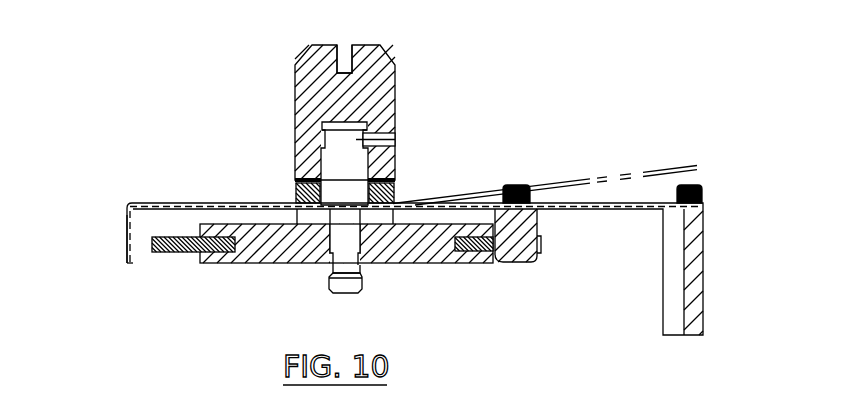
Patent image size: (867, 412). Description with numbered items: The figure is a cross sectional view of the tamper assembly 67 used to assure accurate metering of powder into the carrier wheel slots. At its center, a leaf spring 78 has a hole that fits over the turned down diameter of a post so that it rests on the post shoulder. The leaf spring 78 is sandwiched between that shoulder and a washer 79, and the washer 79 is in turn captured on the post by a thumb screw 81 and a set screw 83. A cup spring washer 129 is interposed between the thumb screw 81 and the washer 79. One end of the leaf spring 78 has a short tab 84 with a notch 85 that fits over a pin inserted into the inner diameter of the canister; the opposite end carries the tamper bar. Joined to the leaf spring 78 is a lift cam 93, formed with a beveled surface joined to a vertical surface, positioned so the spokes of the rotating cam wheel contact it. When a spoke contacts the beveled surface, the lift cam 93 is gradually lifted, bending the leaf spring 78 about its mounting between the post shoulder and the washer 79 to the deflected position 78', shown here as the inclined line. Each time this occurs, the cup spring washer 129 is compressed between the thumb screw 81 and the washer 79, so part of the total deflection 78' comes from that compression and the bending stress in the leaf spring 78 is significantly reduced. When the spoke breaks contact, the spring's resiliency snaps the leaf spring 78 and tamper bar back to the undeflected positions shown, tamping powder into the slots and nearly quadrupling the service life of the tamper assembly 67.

The tamper assembly 67 is at (395, 105).
The leaf spring 78 is at (415, 287).
The deflected position 78' is at (585, 148).
The washer 79 is at (296, 185).
The thumb screw 81 is at (382, 88).
The set screw 83 is at (397, 137).
The short tab 84 is at (126, 230).
The notch 85 is at (126, 262).
The lift cam 93 is at (537, 222).
The cup spring washer 129 is at (394, 182).